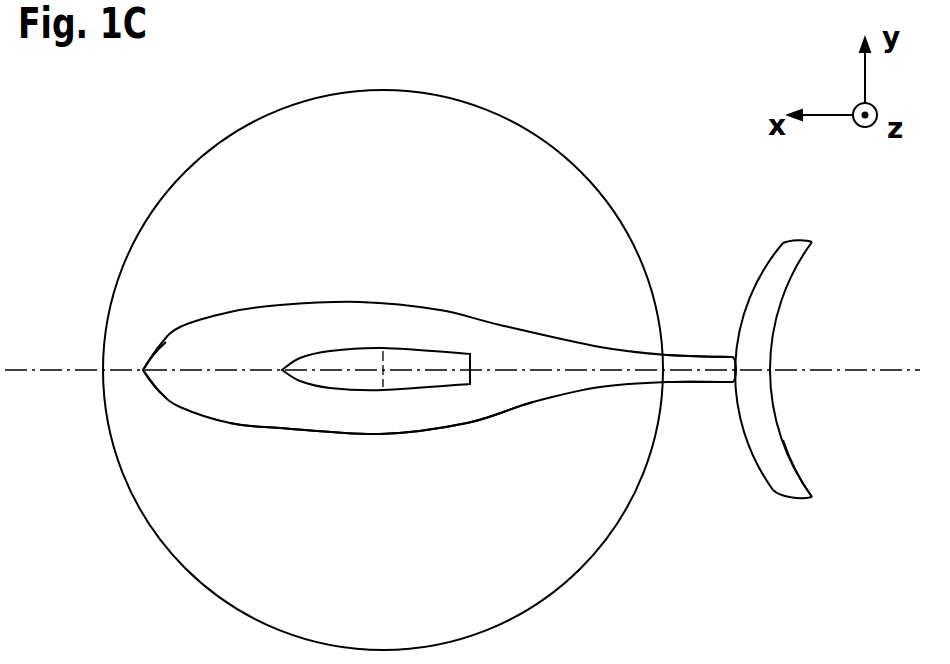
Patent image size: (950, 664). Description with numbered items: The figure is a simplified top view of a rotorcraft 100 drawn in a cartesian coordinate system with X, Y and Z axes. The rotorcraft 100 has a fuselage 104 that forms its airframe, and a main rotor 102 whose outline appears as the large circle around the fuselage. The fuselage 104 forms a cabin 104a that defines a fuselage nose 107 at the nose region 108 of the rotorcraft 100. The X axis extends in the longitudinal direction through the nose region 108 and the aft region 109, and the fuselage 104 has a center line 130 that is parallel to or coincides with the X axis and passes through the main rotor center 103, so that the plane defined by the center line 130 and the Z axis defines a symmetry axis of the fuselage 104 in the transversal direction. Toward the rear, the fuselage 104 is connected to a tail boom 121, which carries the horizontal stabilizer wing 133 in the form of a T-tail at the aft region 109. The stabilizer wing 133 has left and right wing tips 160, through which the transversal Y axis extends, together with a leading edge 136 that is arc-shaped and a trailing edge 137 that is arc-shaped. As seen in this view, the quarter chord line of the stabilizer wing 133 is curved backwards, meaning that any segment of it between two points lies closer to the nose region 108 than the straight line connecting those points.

The rotorcraft 100 is at (502, 325).
The main rotor 102 is at (550, 130).
The main rotor center 103 is at (375, 350).
The fuselage 104 is at (462, 407).
The cabin 104a is at (313, 397).
The fuselage nose 107 is at (130, 380).
The nose region 108 is at (122, 342).
The aft region 109 is at (796, 376).
The tail boom 121 is at (698, 378).
The center line 130 is at (892, 372).
The stabilizer wing 133 is at (773, 282).
The leading edge 136 is at (750, 453).
The trailing edge 137 is at (787, 440).
The wing tips 160 is at (797, 240).